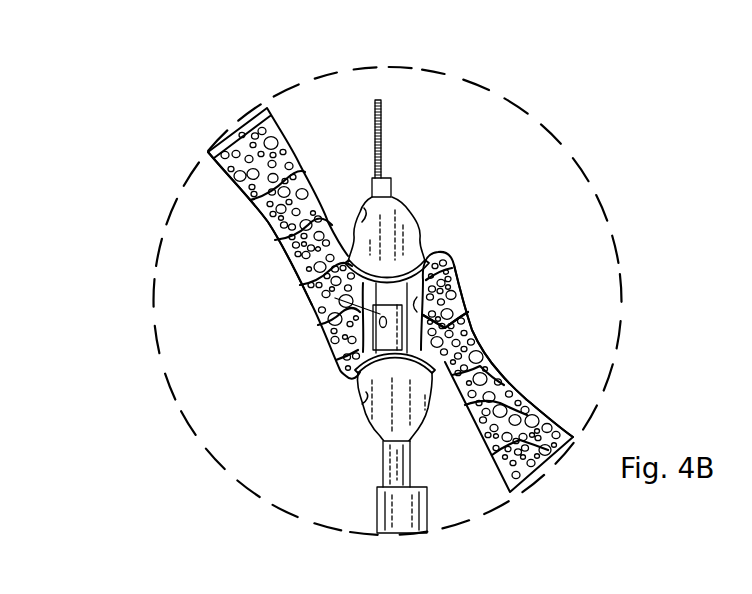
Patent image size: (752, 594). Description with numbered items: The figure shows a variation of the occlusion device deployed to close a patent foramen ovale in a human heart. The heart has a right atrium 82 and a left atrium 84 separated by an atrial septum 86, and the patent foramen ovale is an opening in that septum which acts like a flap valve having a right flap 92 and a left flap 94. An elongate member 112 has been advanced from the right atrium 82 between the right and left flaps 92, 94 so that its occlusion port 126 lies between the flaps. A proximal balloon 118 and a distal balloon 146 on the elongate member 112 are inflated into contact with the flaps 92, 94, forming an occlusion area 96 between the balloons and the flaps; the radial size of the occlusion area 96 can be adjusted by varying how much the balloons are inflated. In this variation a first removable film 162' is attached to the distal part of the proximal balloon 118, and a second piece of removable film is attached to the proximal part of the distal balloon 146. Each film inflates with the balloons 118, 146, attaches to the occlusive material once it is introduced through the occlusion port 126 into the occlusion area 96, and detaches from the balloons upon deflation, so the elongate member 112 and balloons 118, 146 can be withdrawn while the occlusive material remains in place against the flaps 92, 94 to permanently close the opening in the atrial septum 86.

The right atrium 82 is at (217, 257).
The left atrium 84 is at (544, 298).
The atrial septum 86 is at (510, 393).
The right flap 92 is at (323, 340).
The left flap 94 is at (455, 273).
The occlusion area 96 is at (458, 293).
The elongate member 112 is at (378, 464).
The proximal balloon 118 is at (368, 399).
The occlusion port 126 is at (290, 262).
The distal balloon 146 is at (408, 203).
The first removable film 162' is at (472, 459).